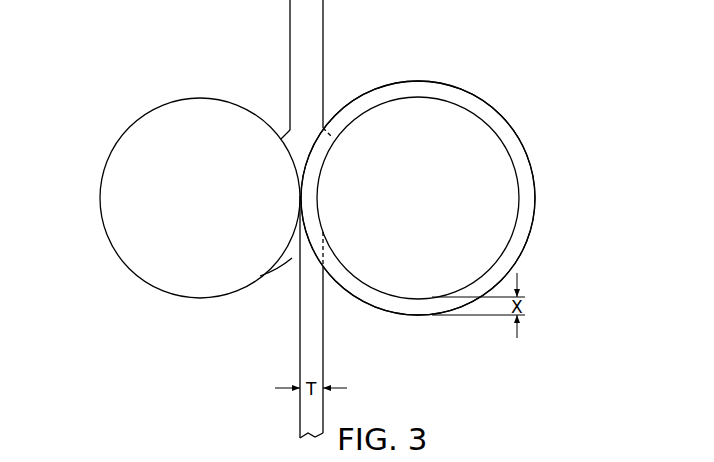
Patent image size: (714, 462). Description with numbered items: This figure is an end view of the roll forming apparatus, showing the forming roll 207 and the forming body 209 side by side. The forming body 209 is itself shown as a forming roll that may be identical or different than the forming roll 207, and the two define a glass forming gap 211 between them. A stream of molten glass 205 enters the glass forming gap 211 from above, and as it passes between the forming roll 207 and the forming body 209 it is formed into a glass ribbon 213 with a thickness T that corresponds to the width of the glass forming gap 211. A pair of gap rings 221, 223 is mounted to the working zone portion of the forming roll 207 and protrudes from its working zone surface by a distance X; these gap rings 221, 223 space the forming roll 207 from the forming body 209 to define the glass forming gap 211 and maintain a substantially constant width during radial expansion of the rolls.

The stream of molten glass 205 is at (323, 42).
The forming roll 207 is at (512, 158).
The forming body 209 is at (100, 198).
The glass forming gap 211 is at (288, 264).
The glass ribbon 213 is at (323, 342).
The gap ring 221 is at (473, 198).
The gap ring 223 is at (536, 196).